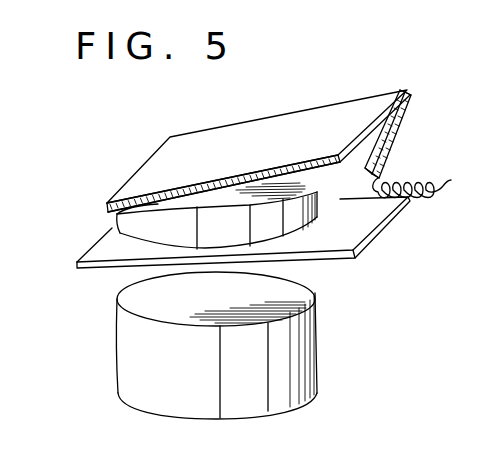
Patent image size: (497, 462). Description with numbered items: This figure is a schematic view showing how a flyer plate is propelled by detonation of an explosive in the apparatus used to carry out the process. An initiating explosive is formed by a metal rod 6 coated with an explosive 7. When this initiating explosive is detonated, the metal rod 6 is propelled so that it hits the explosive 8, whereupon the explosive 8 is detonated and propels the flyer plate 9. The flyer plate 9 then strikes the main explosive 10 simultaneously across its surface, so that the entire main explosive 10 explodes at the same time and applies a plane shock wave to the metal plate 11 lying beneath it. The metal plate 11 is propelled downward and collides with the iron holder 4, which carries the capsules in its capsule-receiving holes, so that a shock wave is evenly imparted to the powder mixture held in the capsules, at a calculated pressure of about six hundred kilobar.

The iron holder 4 is at (287, 355).
The metal rod 6 is at (411, 113).
The explosive 7 is at (399, 133).
The explosive 8 is at (107, 204).
The flyer plate 9 is at (107, 210).
The main explosive 10 is at (146, 226).
The metal plate 11 is at (365, 224).